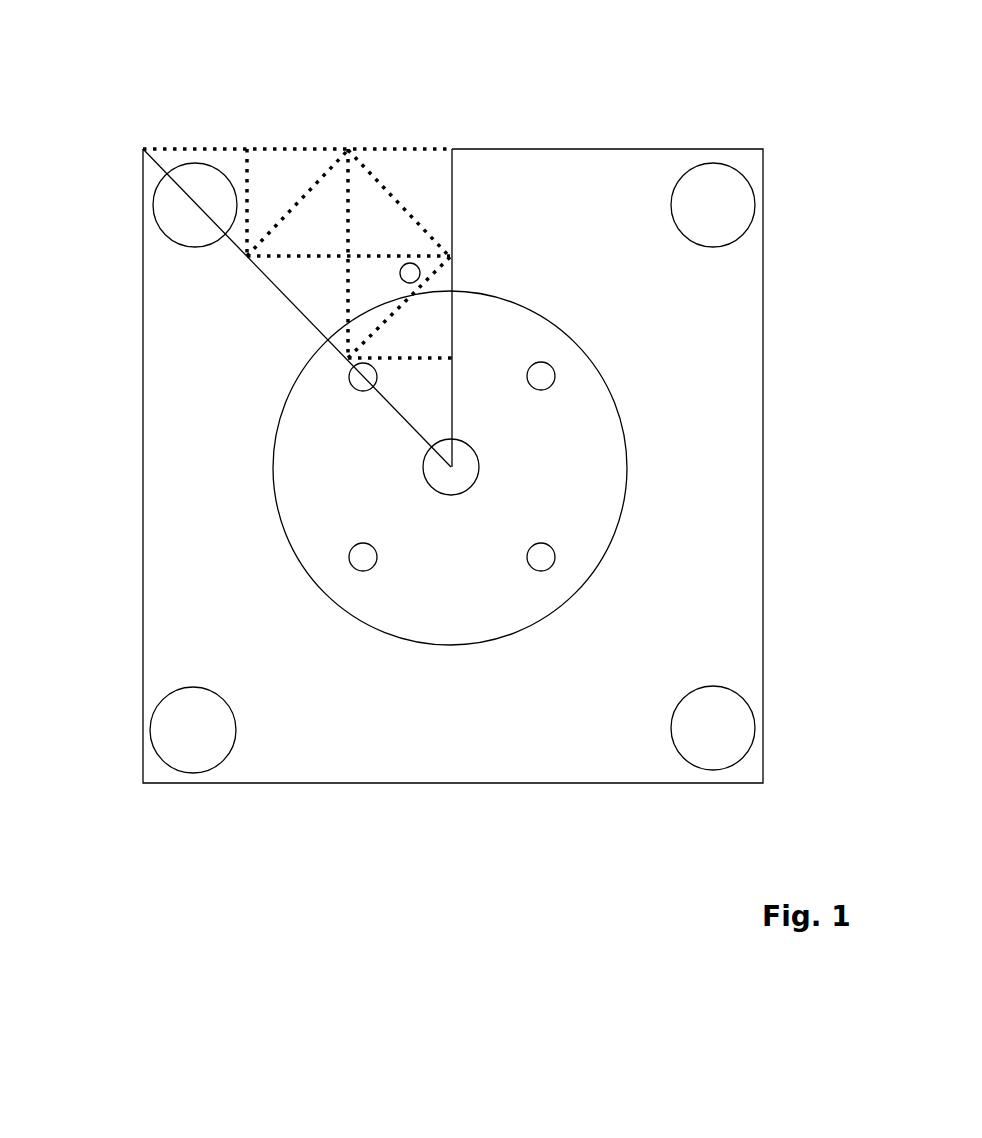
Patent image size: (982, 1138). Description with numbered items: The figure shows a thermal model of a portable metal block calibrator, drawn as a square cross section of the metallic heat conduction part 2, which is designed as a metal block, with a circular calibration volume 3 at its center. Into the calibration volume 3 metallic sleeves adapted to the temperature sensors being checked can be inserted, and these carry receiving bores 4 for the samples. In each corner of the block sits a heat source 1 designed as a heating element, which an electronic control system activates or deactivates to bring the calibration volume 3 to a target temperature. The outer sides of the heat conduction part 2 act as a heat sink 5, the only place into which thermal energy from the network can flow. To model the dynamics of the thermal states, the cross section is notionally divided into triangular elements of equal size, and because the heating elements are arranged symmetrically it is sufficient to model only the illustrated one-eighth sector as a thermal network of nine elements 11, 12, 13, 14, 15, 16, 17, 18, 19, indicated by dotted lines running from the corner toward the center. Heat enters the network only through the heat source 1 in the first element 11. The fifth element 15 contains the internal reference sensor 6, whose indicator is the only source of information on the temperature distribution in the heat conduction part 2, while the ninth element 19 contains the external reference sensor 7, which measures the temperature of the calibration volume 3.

The heat source 1 is at (167, 212).
The heat conduction part 2 is at (210, 332).
The calibration volume 3 is at (323, 465).
The receiving bores 4 is at (355, 380).
The heat sink 5 is at (600, 146).
The internal reference sensor 6 is at (412, 262).
The external reference sensor 7 is at (467, 463).
The first element of the thermal model 11 is at (235, 172).
The second element of the thermal model 12 is at (267, 177).
The third element of the thermal model 13 is at (308, 223).
The fourth element of the thermal model 14 is at (333, 278).
The fifth element of the thermal model 15 is at (372, 277).
The sixth element of the thermal model 16 is at (385, 222).
The seventh element of the thermal model 17 is at (407, 175).
The eighth element of the thermal model 18 is at (438, 312).
The ninth element of the thermal model 19 is at (442, 398).